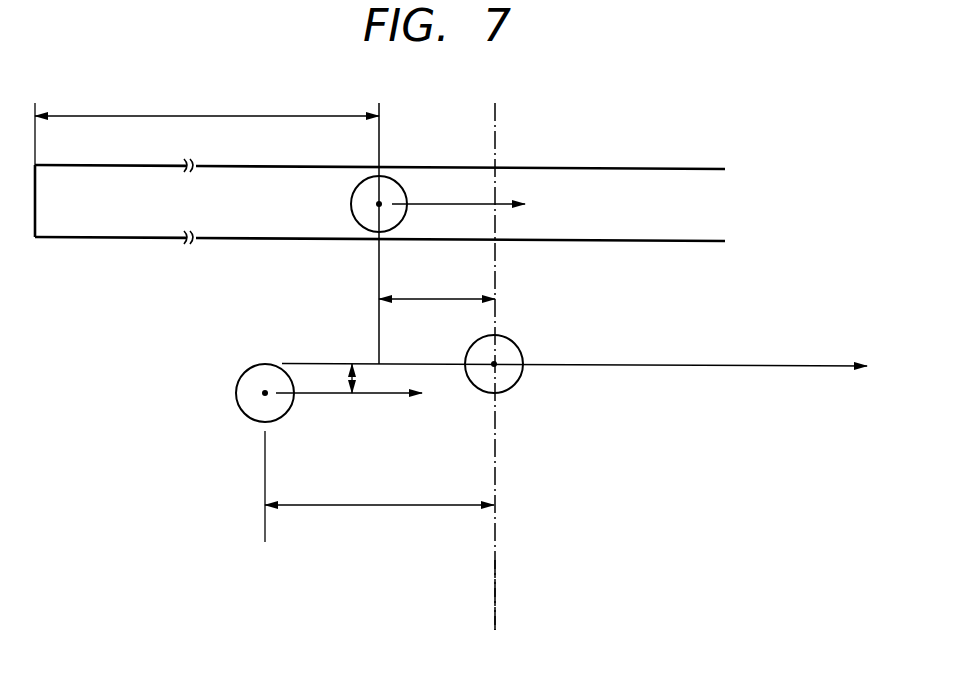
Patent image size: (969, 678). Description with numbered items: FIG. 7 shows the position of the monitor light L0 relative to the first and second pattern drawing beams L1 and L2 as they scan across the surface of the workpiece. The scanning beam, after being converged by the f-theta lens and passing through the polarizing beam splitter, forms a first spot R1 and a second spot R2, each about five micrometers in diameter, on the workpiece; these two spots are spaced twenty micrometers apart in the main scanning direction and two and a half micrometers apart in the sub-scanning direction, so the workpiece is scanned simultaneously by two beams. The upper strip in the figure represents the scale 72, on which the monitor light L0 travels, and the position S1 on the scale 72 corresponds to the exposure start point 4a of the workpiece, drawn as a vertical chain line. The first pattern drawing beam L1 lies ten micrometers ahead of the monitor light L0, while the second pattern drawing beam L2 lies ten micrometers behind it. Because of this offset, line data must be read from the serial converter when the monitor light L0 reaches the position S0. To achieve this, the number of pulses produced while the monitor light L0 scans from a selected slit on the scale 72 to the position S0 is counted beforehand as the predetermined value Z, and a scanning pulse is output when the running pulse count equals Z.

The scale 72 is at (567, 173).
The exposure start point of the workpiece 4a is at (496, 584).
The monitor light L0 is at (351, 205).
The first pattern drawing beam L1 is at (511, 341).
The second pattern drawing beam L2 is at (238, 383).
The first spot R1 is at (512, 388).
The second spot R2 is at (258, 368).
The position S0 is at (381, 137).
The position S1 is at (497, 137).
The predetermined value Z is at (207, 126).